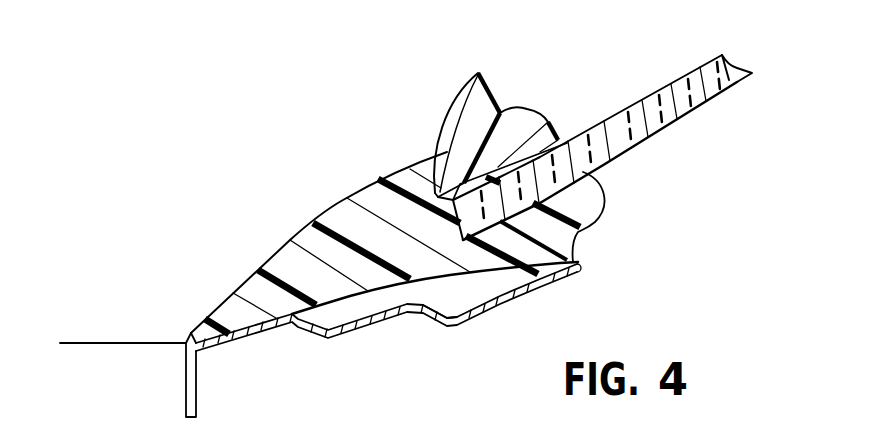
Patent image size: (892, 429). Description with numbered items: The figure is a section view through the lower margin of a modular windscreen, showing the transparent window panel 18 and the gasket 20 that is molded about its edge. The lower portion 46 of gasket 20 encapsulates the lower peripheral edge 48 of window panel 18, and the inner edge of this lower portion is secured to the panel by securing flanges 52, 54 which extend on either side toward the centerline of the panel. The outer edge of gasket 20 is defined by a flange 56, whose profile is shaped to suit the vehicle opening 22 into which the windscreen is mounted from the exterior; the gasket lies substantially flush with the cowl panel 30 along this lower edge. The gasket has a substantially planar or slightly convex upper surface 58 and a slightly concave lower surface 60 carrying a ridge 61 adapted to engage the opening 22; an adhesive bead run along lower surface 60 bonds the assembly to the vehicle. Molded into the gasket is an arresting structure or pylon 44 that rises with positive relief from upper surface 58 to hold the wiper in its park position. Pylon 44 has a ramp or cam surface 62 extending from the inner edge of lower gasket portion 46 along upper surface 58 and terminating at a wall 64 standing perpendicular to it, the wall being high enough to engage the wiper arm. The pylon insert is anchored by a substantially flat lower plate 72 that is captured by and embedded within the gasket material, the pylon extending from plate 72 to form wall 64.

The transparent window panel 18 is at (697, 100).
The gasket 20 is at (215, 265).
The opening 22 is at (583, 268).
The cowl panel 30 is at (138, 342).
The arresting structure 44 is at (438, 84).
The lower portion of gasket 46 is at (284, 236).
The lower peripheral edge 48 is at (565, 240).
The securing flange 52 is at (557, 138).
The securing flange 54 is at (585, 200).
The flange 56 is at (196, 328).
The upper surface 58 is at (343, 200).
The lower surface 60 is at (423, 280).
The ridge 61 is at (495, 308).
The ramp surface 62 is at (518, 108).
The wall 64 is at (490, 82).
The lower plate 72 is at (422, 193).